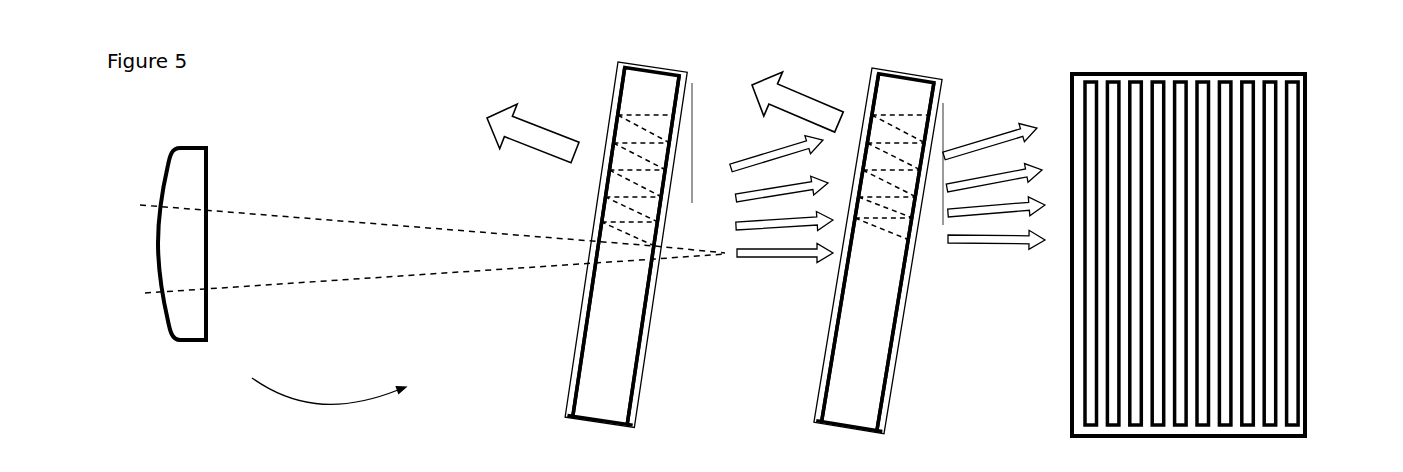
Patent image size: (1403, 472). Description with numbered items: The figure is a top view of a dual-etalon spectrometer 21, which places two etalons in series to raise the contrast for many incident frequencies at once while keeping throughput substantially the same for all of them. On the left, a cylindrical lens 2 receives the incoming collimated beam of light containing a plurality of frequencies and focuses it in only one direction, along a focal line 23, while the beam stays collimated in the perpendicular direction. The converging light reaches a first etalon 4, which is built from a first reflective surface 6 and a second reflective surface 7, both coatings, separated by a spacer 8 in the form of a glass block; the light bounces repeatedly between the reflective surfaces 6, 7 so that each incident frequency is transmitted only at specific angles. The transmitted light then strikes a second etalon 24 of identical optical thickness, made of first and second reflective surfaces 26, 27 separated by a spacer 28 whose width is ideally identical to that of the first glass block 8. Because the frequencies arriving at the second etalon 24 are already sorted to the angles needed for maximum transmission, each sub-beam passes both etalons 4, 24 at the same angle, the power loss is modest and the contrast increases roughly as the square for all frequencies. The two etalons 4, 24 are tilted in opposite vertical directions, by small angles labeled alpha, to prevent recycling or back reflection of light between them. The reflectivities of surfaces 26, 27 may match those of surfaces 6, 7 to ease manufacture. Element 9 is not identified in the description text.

The cylindrical lens 2 is at (355, 163).
The dual-etalon spectrometer 21 is at (315, 385).
The first etalon 4 is at (600, 77).
The spacer 8 is at (644, 82).
The first reflective surface 6 is at (580, 345).
The second reflective surface 7 is at (650, 343).
The focal line 23 is at (727, 253).
The second etalon 24 is at (852, 73).
The spacer 28 is at (895, 88).
The first reflective surface 26 is at (833, 353).
The second reflective surface 27 is at (897, 357).
The grating detector 9 is at (1307, 253).